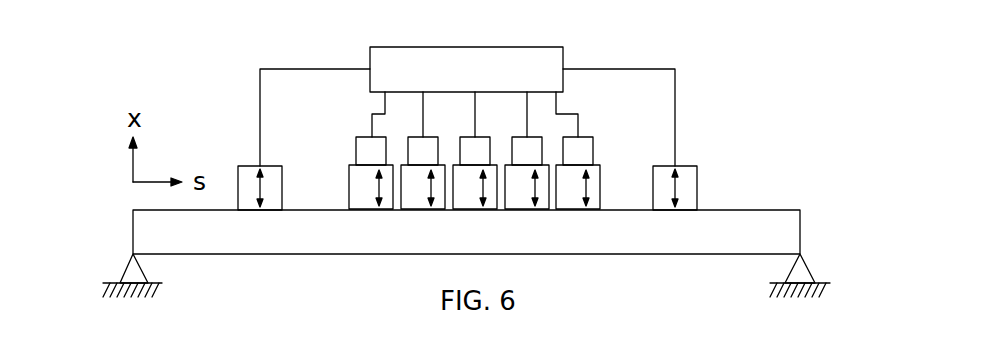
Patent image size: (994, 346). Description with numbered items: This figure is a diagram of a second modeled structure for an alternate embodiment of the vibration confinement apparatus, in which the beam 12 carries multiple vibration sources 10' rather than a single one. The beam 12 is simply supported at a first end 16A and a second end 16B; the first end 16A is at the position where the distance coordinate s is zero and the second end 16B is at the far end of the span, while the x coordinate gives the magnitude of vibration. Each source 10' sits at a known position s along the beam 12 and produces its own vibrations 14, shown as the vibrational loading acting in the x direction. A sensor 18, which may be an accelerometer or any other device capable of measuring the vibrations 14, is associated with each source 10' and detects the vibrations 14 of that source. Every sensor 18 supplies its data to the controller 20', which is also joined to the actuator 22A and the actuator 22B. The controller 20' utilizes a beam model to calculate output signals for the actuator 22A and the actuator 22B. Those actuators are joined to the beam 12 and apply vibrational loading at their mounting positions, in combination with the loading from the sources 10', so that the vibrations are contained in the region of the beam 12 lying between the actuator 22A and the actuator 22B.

The vibration source 10' is at (468, 143).
The beam 12 is at (320, 210).
The vibrations 14 is at (588, 198).
The first end 16A is at (133, 232).
The second end 16B is at (800, 232).
The sensor 18 is at (593, 137).
The controller 20' is at (467, 98).
The actuator 22A is at (238, 166).
The actuator 22B is at (697, 166).